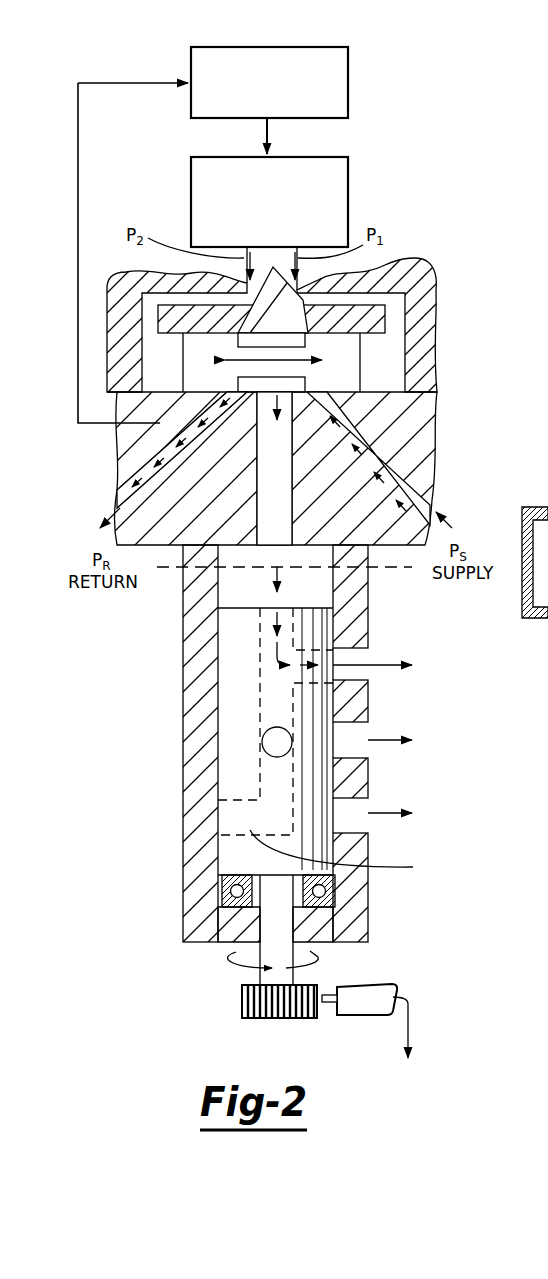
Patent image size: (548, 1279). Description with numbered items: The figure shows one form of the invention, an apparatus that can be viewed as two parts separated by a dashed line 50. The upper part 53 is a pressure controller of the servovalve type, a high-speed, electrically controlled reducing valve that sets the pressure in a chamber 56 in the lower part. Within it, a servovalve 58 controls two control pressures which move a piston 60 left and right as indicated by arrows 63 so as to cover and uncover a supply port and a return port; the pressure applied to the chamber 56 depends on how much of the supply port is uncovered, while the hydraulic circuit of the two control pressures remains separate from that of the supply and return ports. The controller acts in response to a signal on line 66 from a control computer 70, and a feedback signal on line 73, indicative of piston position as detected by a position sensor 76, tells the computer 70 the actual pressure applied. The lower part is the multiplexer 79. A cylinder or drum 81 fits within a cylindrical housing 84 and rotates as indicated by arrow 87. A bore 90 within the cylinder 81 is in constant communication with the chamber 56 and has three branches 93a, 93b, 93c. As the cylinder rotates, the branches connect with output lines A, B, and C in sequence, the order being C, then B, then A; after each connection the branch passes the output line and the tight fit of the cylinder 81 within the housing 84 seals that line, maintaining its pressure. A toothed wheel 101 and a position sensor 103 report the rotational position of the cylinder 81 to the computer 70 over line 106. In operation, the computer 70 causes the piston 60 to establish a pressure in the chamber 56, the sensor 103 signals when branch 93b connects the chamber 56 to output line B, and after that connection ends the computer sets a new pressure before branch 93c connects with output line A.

The dashed line 50 is at (172, 567).
The upper part 53 is at (430, 160).
The chamber 56 is at (316, 594).
The servovalve 58 is at (348, 207).
The piston 60 is at (348, 385).
The arrows 63 is at (272, 360).
The line 66 is at (267, 127).
The control computer 70 is at (348, 85).
The line 73 is at (142, 82).
The position sensor 76 is at (168, 445).
The multiplexer 79 is at (166, 911).
The cylinder 81 is at (240, 672).
The cylindrical housing 84 is at (325, 583).
The arrow 87 is at (238, 958).
The bore 90 is at (285, 618).
The branch 93a is at (318, 656).
The branch 93b is at (287, 737).
The branch 93c is at (353, 857).
The toothed wheel 101 is at (258, 1020).
The position sensor 103 is at (325, 1005).
The line 106 is at (412, 1025).
The output line A is at (402, 814).
The output line B is at (402, 741).
The output line C is at (427, 666).